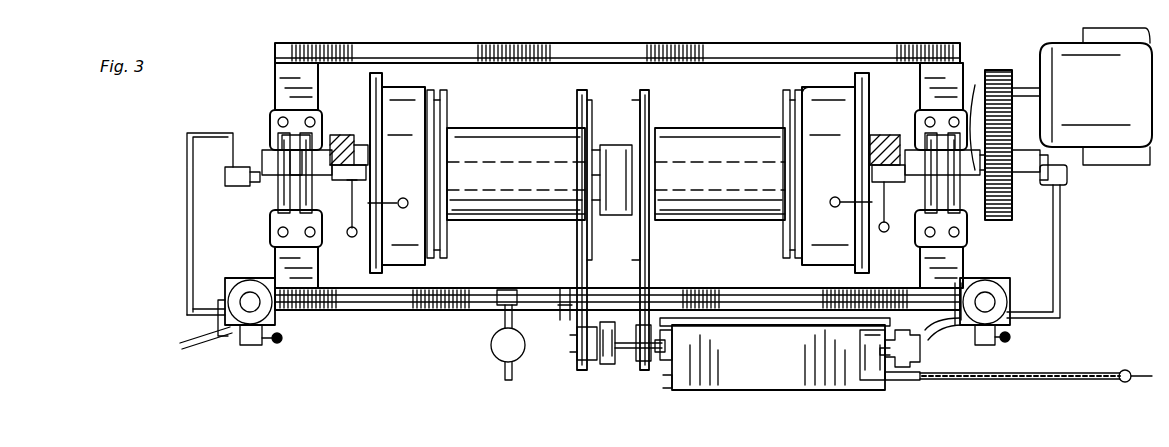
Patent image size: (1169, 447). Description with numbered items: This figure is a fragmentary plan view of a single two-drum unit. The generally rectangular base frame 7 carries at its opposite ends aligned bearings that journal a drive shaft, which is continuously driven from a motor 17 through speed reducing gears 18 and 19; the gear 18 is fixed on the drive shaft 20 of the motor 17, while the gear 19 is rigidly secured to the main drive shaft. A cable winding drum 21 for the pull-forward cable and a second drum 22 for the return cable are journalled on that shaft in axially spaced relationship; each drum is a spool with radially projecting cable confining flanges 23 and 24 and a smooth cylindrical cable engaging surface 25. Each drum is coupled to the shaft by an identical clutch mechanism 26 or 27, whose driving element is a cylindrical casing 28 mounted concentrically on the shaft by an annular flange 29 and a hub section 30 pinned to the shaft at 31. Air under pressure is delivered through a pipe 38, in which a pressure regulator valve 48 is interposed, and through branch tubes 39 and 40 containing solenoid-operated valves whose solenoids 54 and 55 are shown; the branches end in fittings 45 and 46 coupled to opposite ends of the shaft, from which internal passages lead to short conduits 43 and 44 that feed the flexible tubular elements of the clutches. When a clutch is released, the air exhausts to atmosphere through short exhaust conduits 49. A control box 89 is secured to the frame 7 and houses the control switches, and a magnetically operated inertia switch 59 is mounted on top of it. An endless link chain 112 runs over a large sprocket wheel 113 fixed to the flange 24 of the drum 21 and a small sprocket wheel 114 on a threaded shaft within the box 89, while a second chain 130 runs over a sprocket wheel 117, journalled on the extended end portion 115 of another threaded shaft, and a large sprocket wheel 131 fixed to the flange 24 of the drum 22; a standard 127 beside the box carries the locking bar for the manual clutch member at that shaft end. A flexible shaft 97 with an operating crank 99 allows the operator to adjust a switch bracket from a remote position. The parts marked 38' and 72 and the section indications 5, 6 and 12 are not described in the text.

The base frame 7 is at (689, 61).
The section line 12 is at (362, 23).
The section line 6 is at (733, 446).
The section line 5 is at (553, 345).
The branch tube 40 is at (185, 231).
The fitting 46 is at (228, 186).
The pin 31 is at (345, 148).
The short conduit 44 is at (355, 236).
The clutch mechanism 27 is at (404, 88).
The annular flange 29 is at (863, 75).
The clutch mechanism 26 is at (828, 80).
The cylindrical casing 28 is at (618, 176).
The pipe 38 is at (620, 185).
The cable confining flange 23 is at (447, 96).
The second drum 22 is at (503, 127).
The cable engaging surface 25 is at (488, 216).
The cable winding drum 21 is at (739, 126).
The cable confining flange 24 is at (577, 105).
The large sprocket wheel 131 is at (591, 108).
The large sprocket wheel 113 is at (643, 113).
The endless link chain 112 is at (650, 272).
The endless link chain 130 is at (592, 274).
The hub section 30 is at (893, 136).
The short conduit 43 is at (889, 232).
The speed reducing gear 18 is at (1000, 70).
The motor drive shaft 20 is at (1023, 92).
The speed reducing gear 19 is at (1011, 138).
The motor 17 is at (1096, 96).
The fitting 45 is at (1067, 178).
The branch tube 39 is at (1061, 242).
The solenoid 54 is at (992, 302).
The exhaust conduit 49 is at (1007, 343).
The solenoid 55 is at (256, 285).
The standard 127 is at (563, 293).
The pressure regulator valve 48 is at (498, 350).
The pin 38' is at (476, 382).
The sprocket wheel 117 is at (588, 372).
The extended end portion 115 is at (628, 357).
The small sprocket wheel 114 is at (645, 372).
The control box 89 is at (775, 354).
The inertia switch 59 is at (862, 365).
The coupling 72 is at (873, 372).
The flexible shaft 97 is at (986, 381).
The operating crank 99 is at (1143, 372).